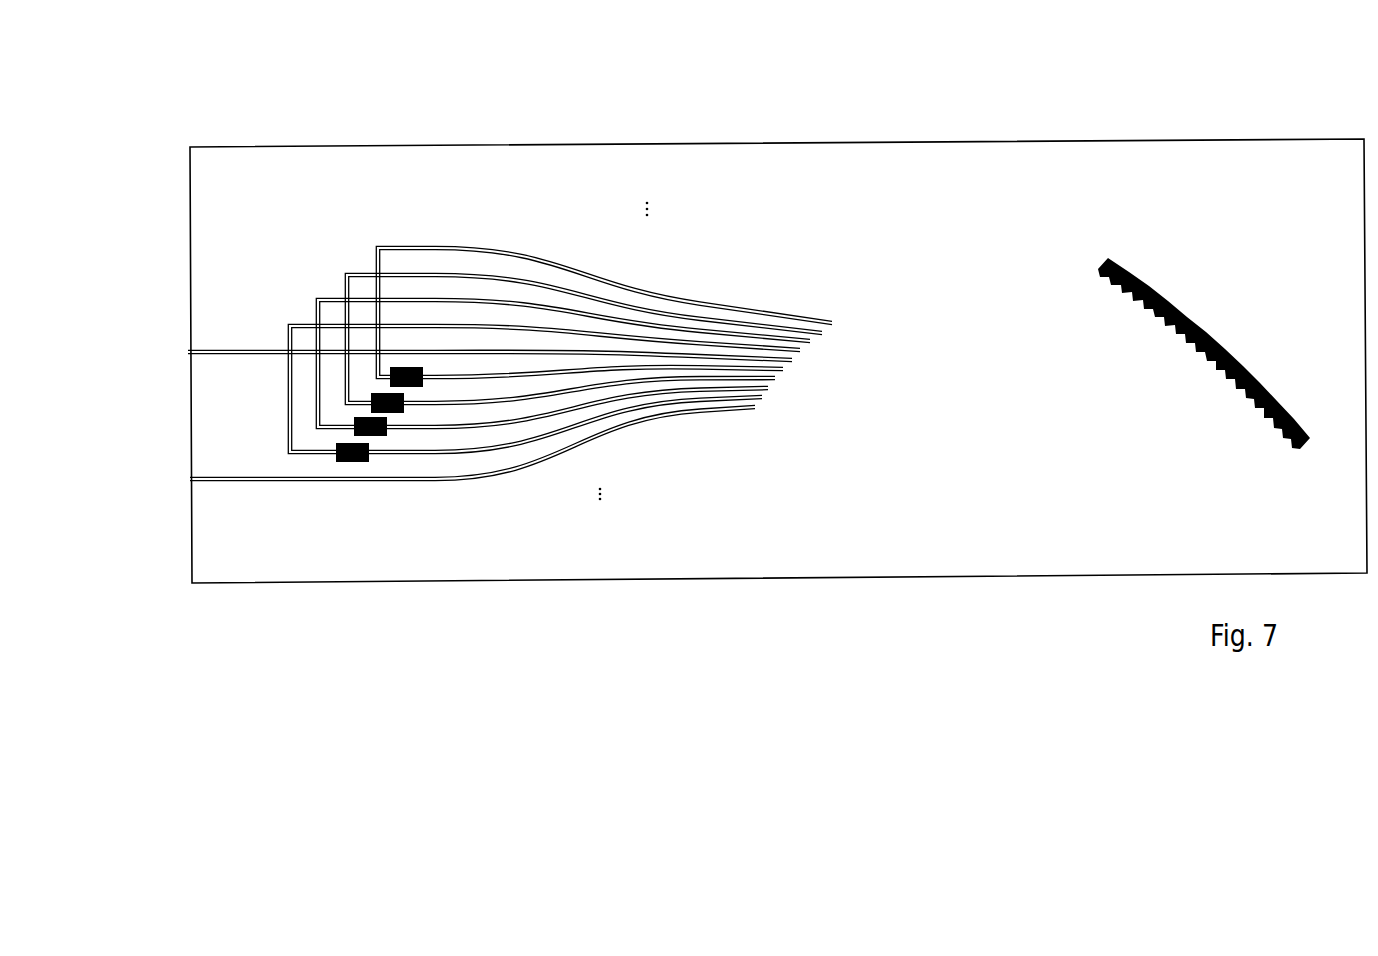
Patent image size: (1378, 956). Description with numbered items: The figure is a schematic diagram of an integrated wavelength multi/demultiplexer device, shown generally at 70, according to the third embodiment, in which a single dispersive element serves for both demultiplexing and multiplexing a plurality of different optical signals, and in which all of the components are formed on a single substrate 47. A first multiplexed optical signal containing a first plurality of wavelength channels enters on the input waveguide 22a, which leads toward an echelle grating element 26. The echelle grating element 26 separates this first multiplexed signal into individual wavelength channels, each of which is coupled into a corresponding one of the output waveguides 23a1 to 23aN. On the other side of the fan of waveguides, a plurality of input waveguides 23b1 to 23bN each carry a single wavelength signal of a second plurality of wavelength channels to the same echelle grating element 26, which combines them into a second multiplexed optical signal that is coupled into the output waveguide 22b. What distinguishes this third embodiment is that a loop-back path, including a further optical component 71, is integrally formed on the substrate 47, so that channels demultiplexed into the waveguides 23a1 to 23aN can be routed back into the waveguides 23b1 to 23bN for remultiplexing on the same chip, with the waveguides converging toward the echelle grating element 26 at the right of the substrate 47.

The integrated multi/demultiplexer device 70 is at (719, 303).
The substrate 47 is at (1038, 170).
The output waveguide 23aN is at (582, 277).
The output waveguide 23a1 is at (590, 340).
The output waveguide 22b is at (655, 362).
The input waveguide 23bN is at (525, 373).
The input waveguide 23b1 is at (518, 442).
The input waveguide 22a is at (647, 419).
The further optical component 71 is at (353, 455).
The echelle grating element 26 is at (1197, 318).